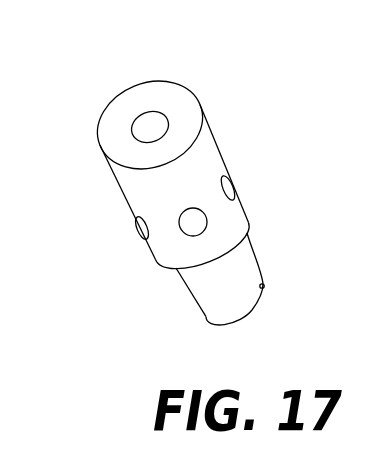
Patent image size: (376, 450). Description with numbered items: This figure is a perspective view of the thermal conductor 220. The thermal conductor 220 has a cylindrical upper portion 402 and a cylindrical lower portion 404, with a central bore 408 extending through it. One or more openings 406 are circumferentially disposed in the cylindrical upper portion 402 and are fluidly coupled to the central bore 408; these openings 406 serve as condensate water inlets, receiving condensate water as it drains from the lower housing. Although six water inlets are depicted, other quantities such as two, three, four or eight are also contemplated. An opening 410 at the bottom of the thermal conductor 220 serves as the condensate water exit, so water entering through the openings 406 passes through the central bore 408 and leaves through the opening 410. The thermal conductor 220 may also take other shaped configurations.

The thermal conductor 220 is at (199, 195).
The cylindrical upper portion 402 is at (210, 151).
The cylindrical lower portion 404 is at (208, 290).
The openings 406 is at (200, 222).
The central bore 408 is at (133, 126).
The opening 410 is at (253, 318).